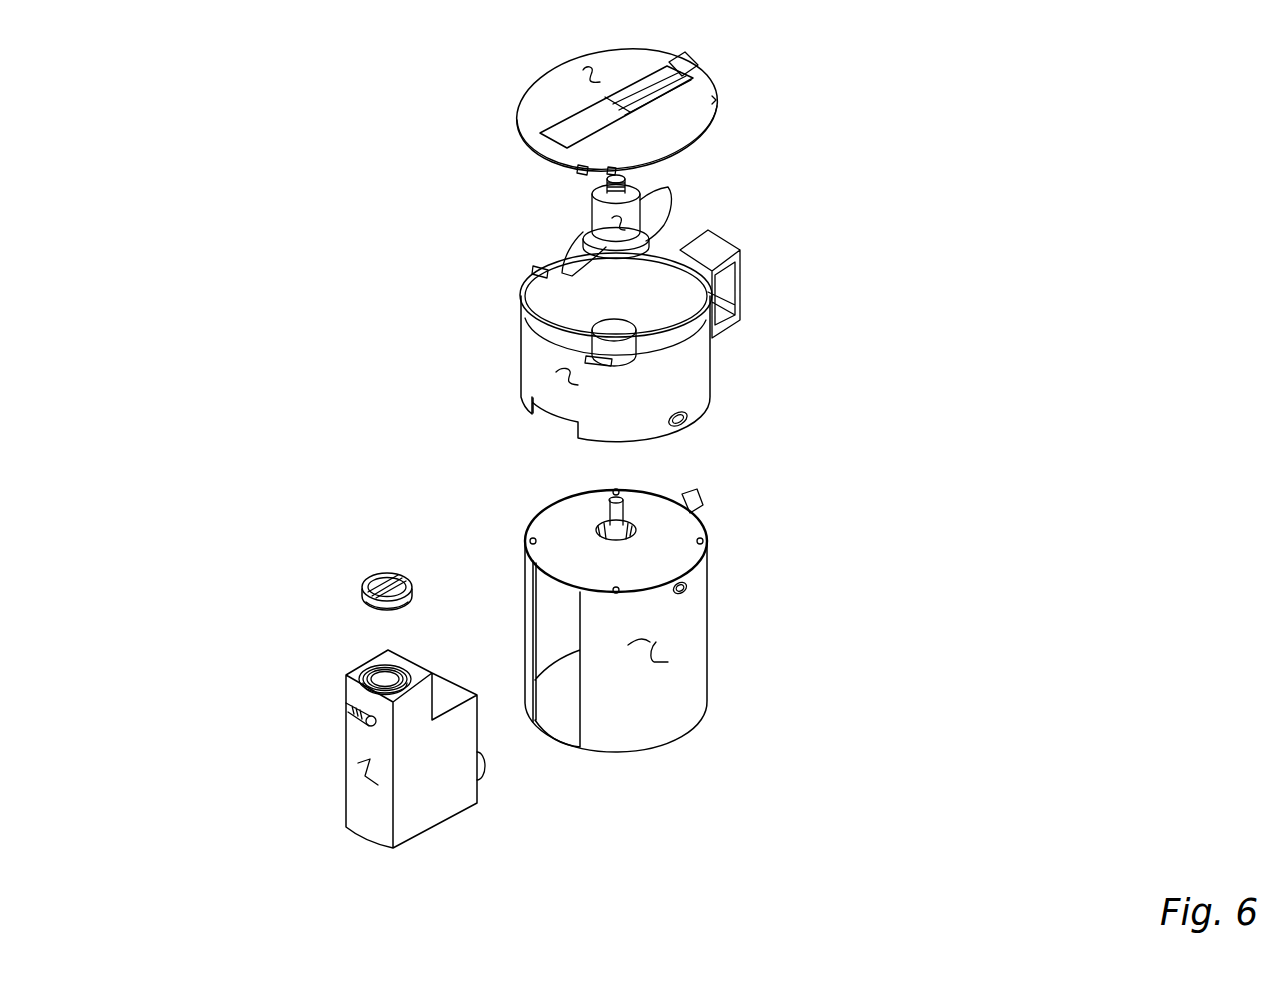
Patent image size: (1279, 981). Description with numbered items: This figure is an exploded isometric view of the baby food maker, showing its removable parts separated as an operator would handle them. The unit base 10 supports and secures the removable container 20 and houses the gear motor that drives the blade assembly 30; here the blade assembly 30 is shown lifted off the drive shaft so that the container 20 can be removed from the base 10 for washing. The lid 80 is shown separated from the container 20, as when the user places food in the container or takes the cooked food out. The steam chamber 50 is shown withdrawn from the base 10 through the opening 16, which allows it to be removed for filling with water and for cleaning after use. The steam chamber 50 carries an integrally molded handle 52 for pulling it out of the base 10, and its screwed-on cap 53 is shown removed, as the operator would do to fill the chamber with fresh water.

The base 10 is at (600, 602).
The opening 16 is at (557, 633).
The container 20 is at (556, 376).
The blade assembly 30 is at (612, 225).
The steam chamber 50 is at (317, 697).
The handle 52 is at (346, 709).
The cap 53 is at (362, 585).
The lid 80 is at (583, 82).